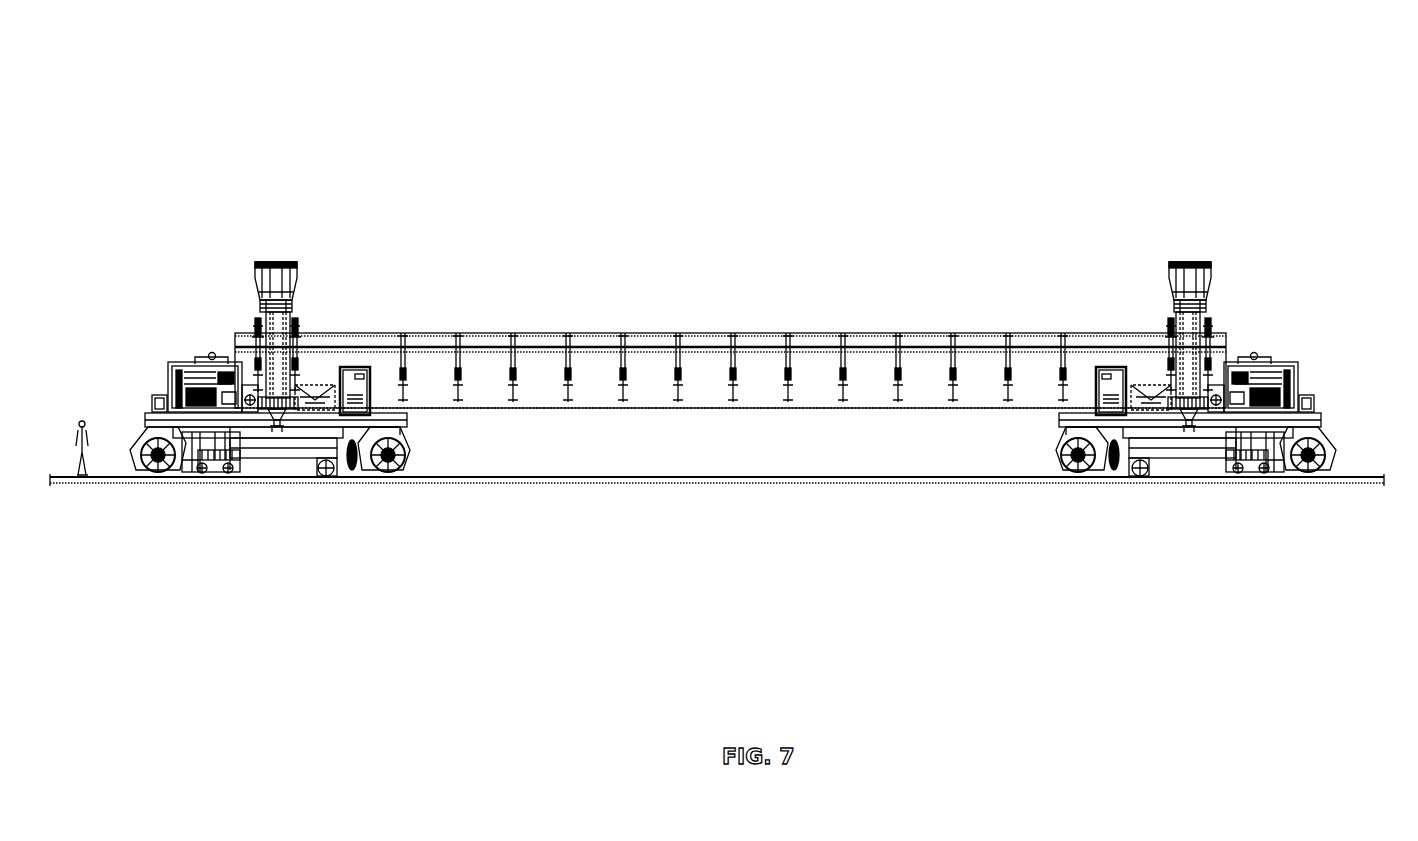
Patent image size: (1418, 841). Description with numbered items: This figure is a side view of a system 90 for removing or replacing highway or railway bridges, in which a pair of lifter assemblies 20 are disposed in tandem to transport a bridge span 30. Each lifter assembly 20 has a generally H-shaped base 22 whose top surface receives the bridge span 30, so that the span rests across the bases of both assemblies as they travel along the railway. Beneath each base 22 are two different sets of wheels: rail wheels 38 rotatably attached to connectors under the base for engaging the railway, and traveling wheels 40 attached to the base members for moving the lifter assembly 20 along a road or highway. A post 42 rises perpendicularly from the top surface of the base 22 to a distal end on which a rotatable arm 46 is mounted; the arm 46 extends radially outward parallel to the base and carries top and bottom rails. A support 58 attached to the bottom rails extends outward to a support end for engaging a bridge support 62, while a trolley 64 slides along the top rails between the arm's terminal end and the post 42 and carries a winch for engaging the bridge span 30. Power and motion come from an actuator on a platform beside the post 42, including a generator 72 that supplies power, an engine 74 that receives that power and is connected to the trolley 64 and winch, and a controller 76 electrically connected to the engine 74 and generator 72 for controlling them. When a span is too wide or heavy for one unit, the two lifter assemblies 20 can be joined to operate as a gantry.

The lifter assembly 20 is at (250, 433).
The base 22 is at (283, 440).
The bridge span 30 is at (762, 370).
The rail wheels 38 is at (328, 470).
The traveling wheels 40 is at (385, 472).
The post 42 is at (255, 275).
The arm 46 is at (282, 264).
The support 58 is at (272, 440).
The bridge support 62 is at (805, 478).
The trolley 64 is at (290, 264).
The generator 72 is at (183, 373).
The engine 74 is at (312, 388).
The controller 76 is at (183, 463).
The system 90 is at (876, 290).